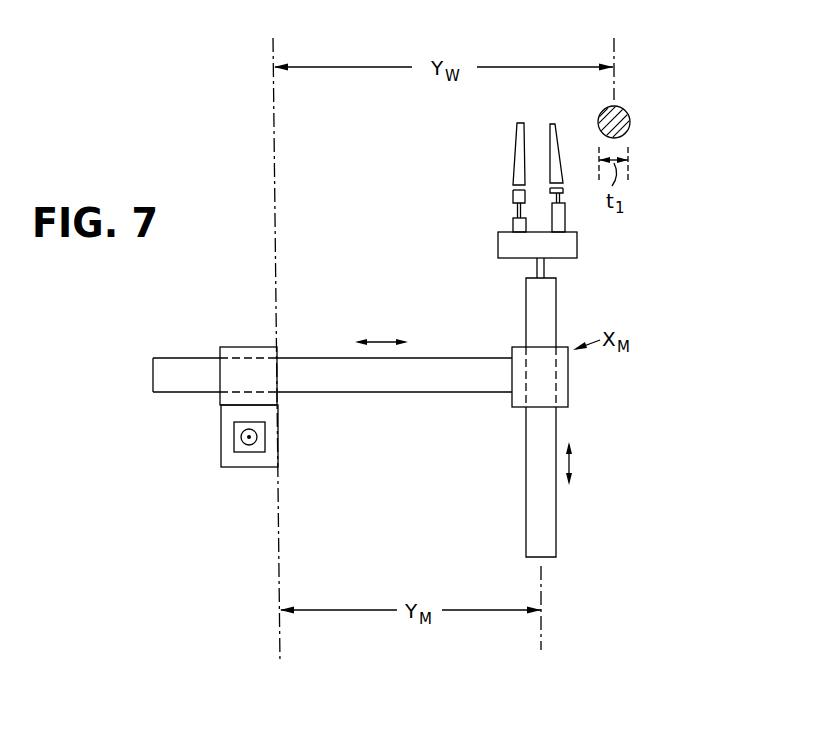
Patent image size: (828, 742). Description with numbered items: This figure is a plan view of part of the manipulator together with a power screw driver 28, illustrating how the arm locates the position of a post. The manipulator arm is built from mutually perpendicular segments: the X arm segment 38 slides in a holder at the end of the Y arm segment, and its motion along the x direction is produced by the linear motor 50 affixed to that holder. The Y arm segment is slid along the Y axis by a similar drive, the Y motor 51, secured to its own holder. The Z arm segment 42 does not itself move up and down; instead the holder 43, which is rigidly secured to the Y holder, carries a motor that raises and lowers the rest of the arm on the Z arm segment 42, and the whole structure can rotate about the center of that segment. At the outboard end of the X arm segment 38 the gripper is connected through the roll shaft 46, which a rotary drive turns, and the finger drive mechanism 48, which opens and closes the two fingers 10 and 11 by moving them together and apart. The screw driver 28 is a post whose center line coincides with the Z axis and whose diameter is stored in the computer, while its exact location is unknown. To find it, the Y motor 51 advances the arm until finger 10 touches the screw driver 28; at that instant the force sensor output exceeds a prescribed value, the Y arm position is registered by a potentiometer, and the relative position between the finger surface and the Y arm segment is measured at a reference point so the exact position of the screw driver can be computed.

The finger 10 is at (556, 128).
The finger 11 is at (515, 140).
The screw driver 28 is at (625, 117).
The X arm segment 38 is at (553, 320).
The Z arm segment 42 is at (250, 437).
The holder 43 is at (247, 468).
The roll shaft 46 is at (545, 272).
The finger drive mechanism 48 is at (572, 253).
The linear motor 50 is at (568, 383).
The Y motor 51 is at (228, 403).